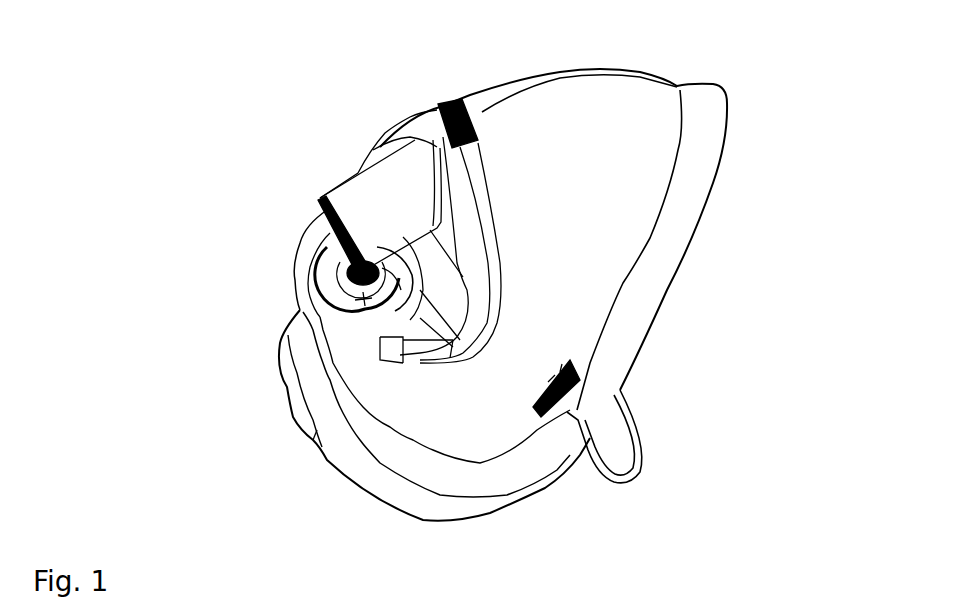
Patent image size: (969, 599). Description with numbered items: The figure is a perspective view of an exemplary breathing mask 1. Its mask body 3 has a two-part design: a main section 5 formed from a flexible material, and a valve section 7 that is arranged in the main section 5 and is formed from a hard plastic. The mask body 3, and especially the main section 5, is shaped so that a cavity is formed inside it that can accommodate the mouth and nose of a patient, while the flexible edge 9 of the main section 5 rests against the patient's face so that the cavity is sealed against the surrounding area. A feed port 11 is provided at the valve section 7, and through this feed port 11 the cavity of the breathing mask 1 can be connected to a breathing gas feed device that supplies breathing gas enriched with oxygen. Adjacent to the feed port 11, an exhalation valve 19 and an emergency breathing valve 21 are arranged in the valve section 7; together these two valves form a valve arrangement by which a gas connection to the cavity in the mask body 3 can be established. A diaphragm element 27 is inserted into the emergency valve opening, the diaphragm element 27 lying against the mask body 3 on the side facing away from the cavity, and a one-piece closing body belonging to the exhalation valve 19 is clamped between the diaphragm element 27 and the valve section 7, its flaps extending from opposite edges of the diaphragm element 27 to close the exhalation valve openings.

The breathing mask 1 is at (666, 69).
The mask body 3 is at (543, 305).
The main section 5 is at (571, 206).
The valve section 7 is at (412, 314).
The flexible edge 9 is at (657, 243).
The feed port 11 is at (375, 195).
The exhalation valve 19 is at (390, 307).
The emergency breathing valve 21 is at (355, 270).
The diaphragm element 27 is at (403, 273).